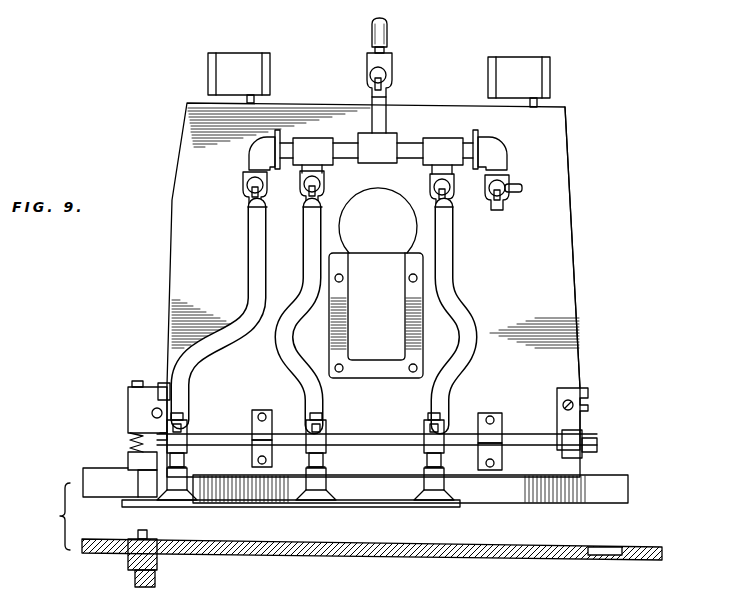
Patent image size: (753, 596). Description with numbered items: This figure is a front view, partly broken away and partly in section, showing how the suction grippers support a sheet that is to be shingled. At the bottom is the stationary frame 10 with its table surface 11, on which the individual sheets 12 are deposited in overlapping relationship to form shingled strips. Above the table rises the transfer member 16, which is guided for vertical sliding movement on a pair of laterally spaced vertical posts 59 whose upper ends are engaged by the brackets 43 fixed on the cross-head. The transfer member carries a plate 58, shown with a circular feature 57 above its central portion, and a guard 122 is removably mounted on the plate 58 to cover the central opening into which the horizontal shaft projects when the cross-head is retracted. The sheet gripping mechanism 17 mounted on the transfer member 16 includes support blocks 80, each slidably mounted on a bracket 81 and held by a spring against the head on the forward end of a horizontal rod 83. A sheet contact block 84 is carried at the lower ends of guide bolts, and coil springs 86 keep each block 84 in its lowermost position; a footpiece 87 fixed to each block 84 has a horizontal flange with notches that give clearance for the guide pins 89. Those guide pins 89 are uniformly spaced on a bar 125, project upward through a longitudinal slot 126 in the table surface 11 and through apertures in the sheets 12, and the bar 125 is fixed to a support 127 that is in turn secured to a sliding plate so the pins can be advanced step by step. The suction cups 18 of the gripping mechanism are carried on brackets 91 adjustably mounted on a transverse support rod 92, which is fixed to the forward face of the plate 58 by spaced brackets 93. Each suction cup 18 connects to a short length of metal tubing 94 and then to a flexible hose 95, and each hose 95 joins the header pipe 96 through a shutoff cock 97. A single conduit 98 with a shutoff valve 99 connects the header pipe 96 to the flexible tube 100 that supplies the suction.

The stationary frame 10 is at (503, 561).
The table surface 11 is at (528, 546).
The sheet 12 is at (396, 508).
The transfer member 16 is at (580, 325).
The sheet gripping device 17 is at (192, 484).
The suction cup 18 is at (183, 502).
The bracket 43 is at (210, 70).
The opening 57 is at (382, 212).
The plate 58 is at (581, 240).
The vertical post 59 is at (240, 100).
The support block 80 is at (128, 395).
The bracket 81 is at (164, 385).
The horizontal rod 83 is at (152, 413).
The sheet contact block 84 is at (128, 460).
The coil spring 86 is at (130, 440).
The footpiece 87 is at (128, 487).
The guide pin 89 is at (138, 533).
The bracket 91 is at (187, 425).
The transverse support rod 92 is at (530, 437).
The bracket 93 is at (258, 410).
The metal tubing 94 is at (188, 457).
The flexible hose 95 is at (476, 266).
The header pipe 96 is at (412, 150).
The shutoff cock 97 is at (247, 188).
The conduit 98 is at (378, 118).
The shutoff valve 99 is at (386, 73).
The flexible tube 100 is at (389, 34).
The guard 122 is at (390, 345).
The bar 125 is at (128, 560).
The longitudinal slot 126 is at (604, 547).
The support 127 is at (157, 562).